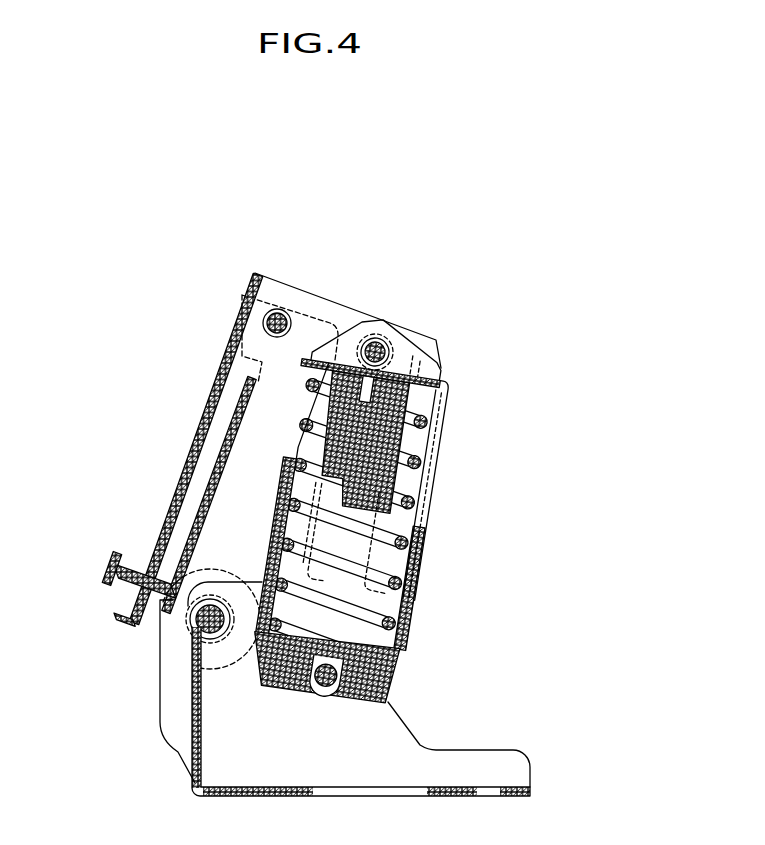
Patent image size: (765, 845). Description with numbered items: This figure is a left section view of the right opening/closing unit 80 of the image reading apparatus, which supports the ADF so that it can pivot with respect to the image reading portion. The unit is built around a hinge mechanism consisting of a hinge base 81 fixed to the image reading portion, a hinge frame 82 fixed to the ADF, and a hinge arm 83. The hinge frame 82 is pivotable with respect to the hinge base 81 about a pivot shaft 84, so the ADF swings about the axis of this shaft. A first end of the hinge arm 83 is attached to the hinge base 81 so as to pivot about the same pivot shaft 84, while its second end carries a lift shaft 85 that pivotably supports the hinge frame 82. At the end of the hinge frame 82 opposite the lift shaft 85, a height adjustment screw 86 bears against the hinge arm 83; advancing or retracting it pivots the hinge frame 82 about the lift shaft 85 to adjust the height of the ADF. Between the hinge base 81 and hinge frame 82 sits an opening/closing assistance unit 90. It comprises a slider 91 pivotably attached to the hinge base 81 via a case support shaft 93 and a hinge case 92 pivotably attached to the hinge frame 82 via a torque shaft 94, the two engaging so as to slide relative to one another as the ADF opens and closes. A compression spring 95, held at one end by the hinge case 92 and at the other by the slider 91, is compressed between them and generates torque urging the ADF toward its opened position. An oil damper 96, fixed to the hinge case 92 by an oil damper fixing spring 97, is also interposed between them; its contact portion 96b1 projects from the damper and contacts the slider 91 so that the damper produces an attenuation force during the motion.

The opening/closing unit 80 is at (456, 254).
The hinge base 81 is at (522, 767).
The hinge frame 82 is at (203, 407).
The hinge arm 83 is at (205, 487).
The pivot shaft 84 is at (200, 621).
The lift shaft 85 is at (290, 310).
The height adjustment screw 86 is at (107, 560).
The opening/closing assistance unit 90 is at (507, 416).
The slider 91 is at (382, 662).
The hinge case 92 is at (441, 364).
The case support shaft 93 is at (327, 692).
The torque shaft 94 is at (373, 340).
The compression spring 95 is at (413, 612).
The oil damper 96 is at (401, 437).
The contact portion 96b1 is at (320, 511).
The oil damper fixing spring 97 is at (392, 348).